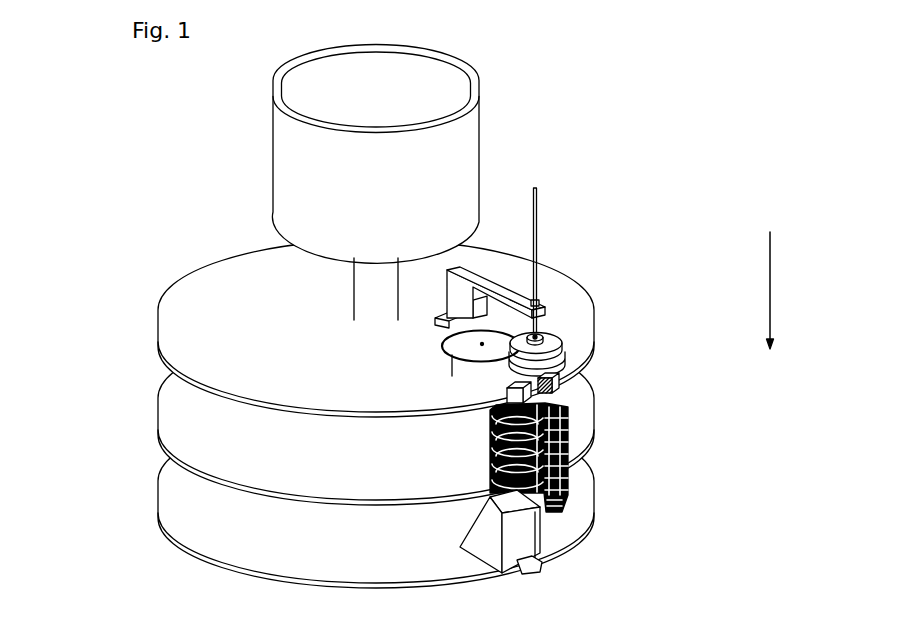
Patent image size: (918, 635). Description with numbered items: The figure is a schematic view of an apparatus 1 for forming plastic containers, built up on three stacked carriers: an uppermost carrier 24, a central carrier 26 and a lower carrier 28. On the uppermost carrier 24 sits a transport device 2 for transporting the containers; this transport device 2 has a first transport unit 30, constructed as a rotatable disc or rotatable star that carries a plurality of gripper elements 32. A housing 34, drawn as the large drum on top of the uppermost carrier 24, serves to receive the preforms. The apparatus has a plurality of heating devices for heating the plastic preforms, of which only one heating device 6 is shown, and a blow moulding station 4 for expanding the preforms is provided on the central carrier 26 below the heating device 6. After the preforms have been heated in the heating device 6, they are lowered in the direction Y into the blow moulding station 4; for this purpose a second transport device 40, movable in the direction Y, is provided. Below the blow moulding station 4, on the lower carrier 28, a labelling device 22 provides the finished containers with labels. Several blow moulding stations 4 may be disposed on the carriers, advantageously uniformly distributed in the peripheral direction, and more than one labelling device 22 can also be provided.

The apparatus 1 is at (512, 129).
The transport device 2 is at (556, 292).
The blow moulding station 4 is at (592, 459).
The heating device 6 is at (573, 342).
The labelling device 22 is at (520, 547).
The uppermost carrier 24 is at (263, 305).
The central carrier 26 is at (255, 452).
The lower carrier 28 is at (233, 540).
The first transport unit 30 is at (482, 345).
The gripper elements 32 is at (450, 352).
The housing 34 is at (332, 190).
The second transport device 40 is at (537, 222).